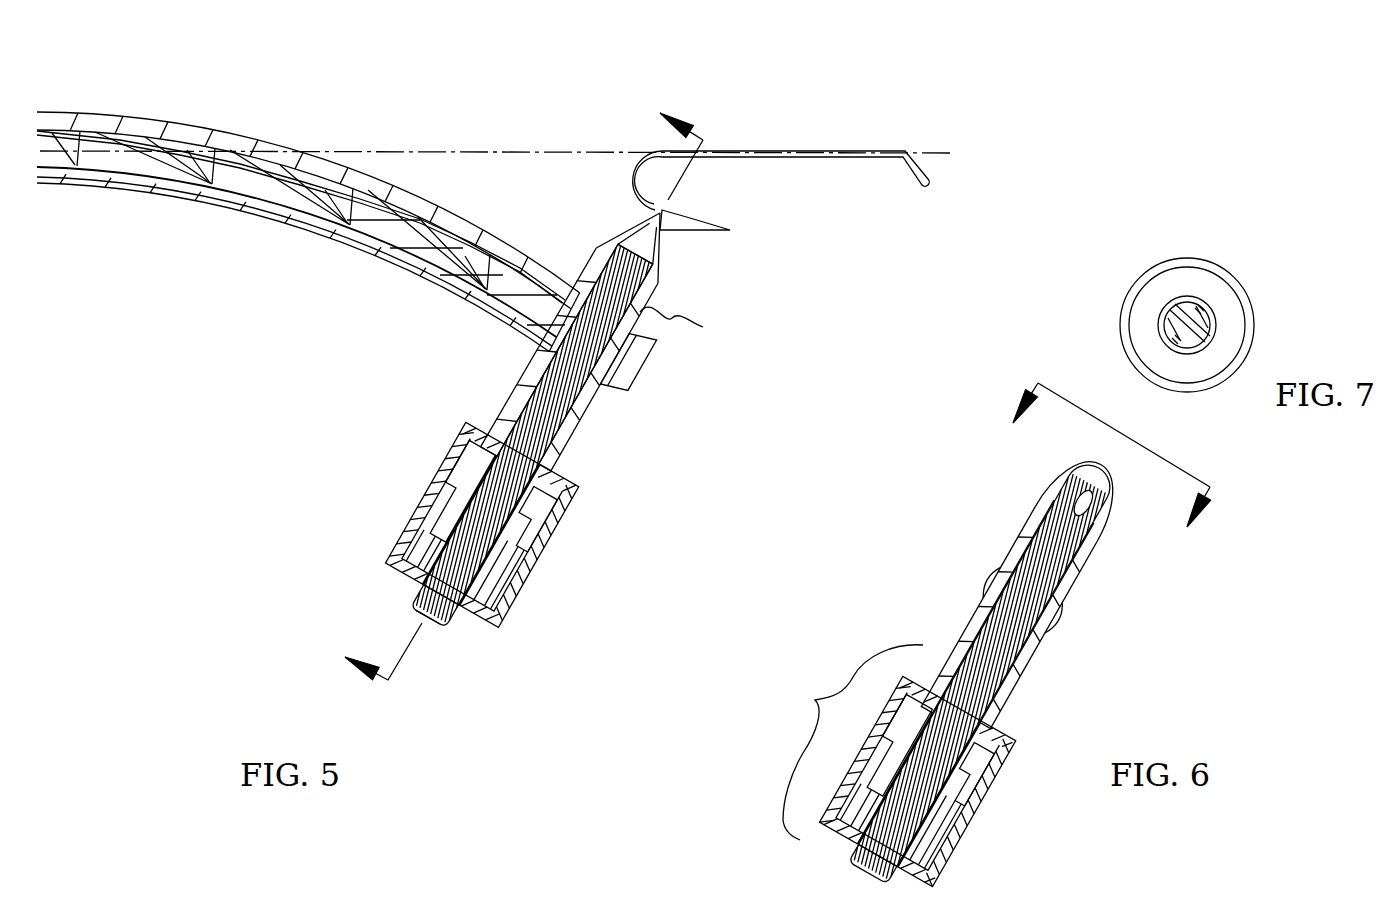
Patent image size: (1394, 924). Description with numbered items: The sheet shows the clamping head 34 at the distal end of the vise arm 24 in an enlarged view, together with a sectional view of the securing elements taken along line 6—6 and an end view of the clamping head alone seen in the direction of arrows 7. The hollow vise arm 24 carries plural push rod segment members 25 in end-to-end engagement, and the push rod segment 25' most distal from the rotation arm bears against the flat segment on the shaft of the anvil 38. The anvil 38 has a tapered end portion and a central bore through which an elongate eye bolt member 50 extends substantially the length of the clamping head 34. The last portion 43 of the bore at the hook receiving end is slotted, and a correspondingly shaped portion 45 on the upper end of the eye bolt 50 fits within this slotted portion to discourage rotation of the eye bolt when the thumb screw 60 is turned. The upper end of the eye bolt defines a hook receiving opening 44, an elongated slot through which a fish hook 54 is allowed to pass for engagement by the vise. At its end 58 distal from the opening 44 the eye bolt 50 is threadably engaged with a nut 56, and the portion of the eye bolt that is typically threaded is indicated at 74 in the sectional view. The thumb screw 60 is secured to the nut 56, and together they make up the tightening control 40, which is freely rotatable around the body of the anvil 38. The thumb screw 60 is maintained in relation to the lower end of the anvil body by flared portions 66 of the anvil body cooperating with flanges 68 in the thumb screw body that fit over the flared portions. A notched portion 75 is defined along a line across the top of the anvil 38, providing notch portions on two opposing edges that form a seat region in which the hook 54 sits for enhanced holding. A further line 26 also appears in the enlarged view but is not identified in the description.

In FIG. 5, the section line 6— 6 is at (537, 411).
In FIG. 6, the arrows 7 is at (1212, 470).
In FIG. 5, the vise arm 24 is at (350, 250).
In FIG. 5, the push rod segment members 25 is at (308, 189).
In FIG. 5, the push rod segment most distal from the rotation arm 25' is at (297, 215).
In FIG. 5, the centerline axis 26 is at (510, 148).
In FIG. 5, the clamping head 34 is at (680, 479).
In FIG. 7, the clamping head 34 is at (1215, 238).
In FIG. 5, the anvil 38 is at (657, 277).
In FIG. 6, the anvil 38 is at (1067, 482).
In FIG. 5, the tightening control 40 is at (515, 604).
In FIG. 5, the last portion of the bore 43 is at (662, 238).
In FIG. 5, the hook receiving opening 44 is at (643, 228).
In FIG. 6, the hook receiving opening 44 is at (1058, 505).
In FIG. 7, the hook receiving opening 44 is at (1170, 312).
In FIG. 5, the correspondingly shaped portion 45 is at (600, 267).
In FIG. 6, the eye bolt member 50 is at (1015, 632).
In FIG. 7, the eye bolt member 50 is at (1215, 340).
In FIG. 5, the fish hook 54 is at (750, 152).
In FIG. 5, the nut 56 is at (407, 593).
In FIG. 5, the end of the eye bolt 58 is at (451, 638).
In FIG. 5, the thumb screw 60 is at (545, 548).
In FIG. 7, the thumb screw 60 is at (1197, 393).
In FIG. 5, the flared portions 66 is at (548, 510).
In FIG. 5, the flanges 68 is at (478, 420).
In FIG. 6, the flanges 68 is at (1008, 736).
In FIG. 6, the threaded portion of the eye bolt 74 is at (815, 700).
In FIG. 6, the notched portion 75 is at (1113, 506).
In FIG. 7, the notched portion 75 is at (1208, 308).